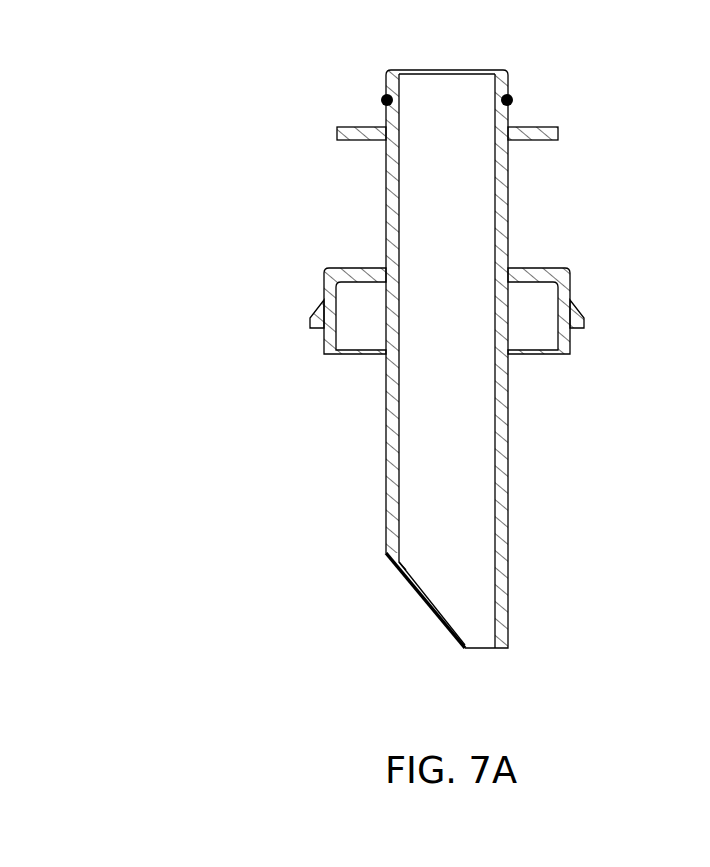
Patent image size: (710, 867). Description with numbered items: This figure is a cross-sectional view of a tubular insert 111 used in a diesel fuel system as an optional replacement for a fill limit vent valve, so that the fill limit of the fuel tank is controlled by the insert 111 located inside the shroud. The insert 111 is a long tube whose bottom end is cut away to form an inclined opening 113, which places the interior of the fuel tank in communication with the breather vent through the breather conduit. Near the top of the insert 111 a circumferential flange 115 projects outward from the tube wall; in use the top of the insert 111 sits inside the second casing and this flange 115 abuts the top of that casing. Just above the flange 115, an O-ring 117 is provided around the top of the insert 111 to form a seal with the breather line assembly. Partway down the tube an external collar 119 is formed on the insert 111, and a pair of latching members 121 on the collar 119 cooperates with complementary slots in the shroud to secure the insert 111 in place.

The tubular insert 111 is at (283, 210).
The inclined opening 113 is at (435, 595).
The circumferential flange 115 is at (547, 128).
The O-ring 117 is at (382, 98).
The external collar 119 is at (323, 350).
The latching members 121 is at (310, 322).